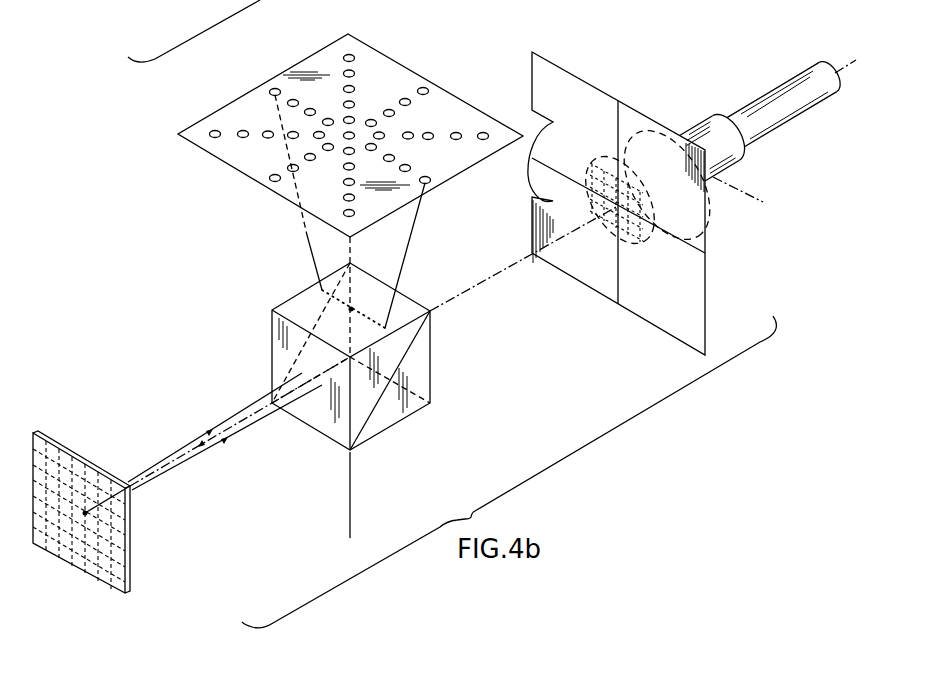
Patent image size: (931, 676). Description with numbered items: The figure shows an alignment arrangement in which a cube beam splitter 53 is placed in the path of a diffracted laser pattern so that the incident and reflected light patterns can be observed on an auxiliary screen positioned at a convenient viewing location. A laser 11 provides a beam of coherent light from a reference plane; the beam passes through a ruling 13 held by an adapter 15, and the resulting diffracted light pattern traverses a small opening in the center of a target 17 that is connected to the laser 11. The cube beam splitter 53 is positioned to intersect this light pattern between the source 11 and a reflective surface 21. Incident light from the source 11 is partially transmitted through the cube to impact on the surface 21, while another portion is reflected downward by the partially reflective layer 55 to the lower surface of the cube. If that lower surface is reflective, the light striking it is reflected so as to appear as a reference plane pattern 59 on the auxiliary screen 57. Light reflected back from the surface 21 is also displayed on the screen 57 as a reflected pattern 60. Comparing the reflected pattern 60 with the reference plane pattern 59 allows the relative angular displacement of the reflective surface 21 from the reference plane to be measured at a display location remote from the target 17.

The laser 11 is at (757, 137).
The ruling 13 is at (705, 247).
The adapter 15 is at (712, 180).
The target 17 is at (694, 325).
The reflective surface 21 is at (131, 560).
The cube beam splitter 53 is at (431, 382).
The partially reflective layer 55 is at (413, 340).
The auxiliary screen 57 is at (235, 170).
The reference plane pattern 59 is at (423, 88).
The reflected pattern 60 is at (353, 70).